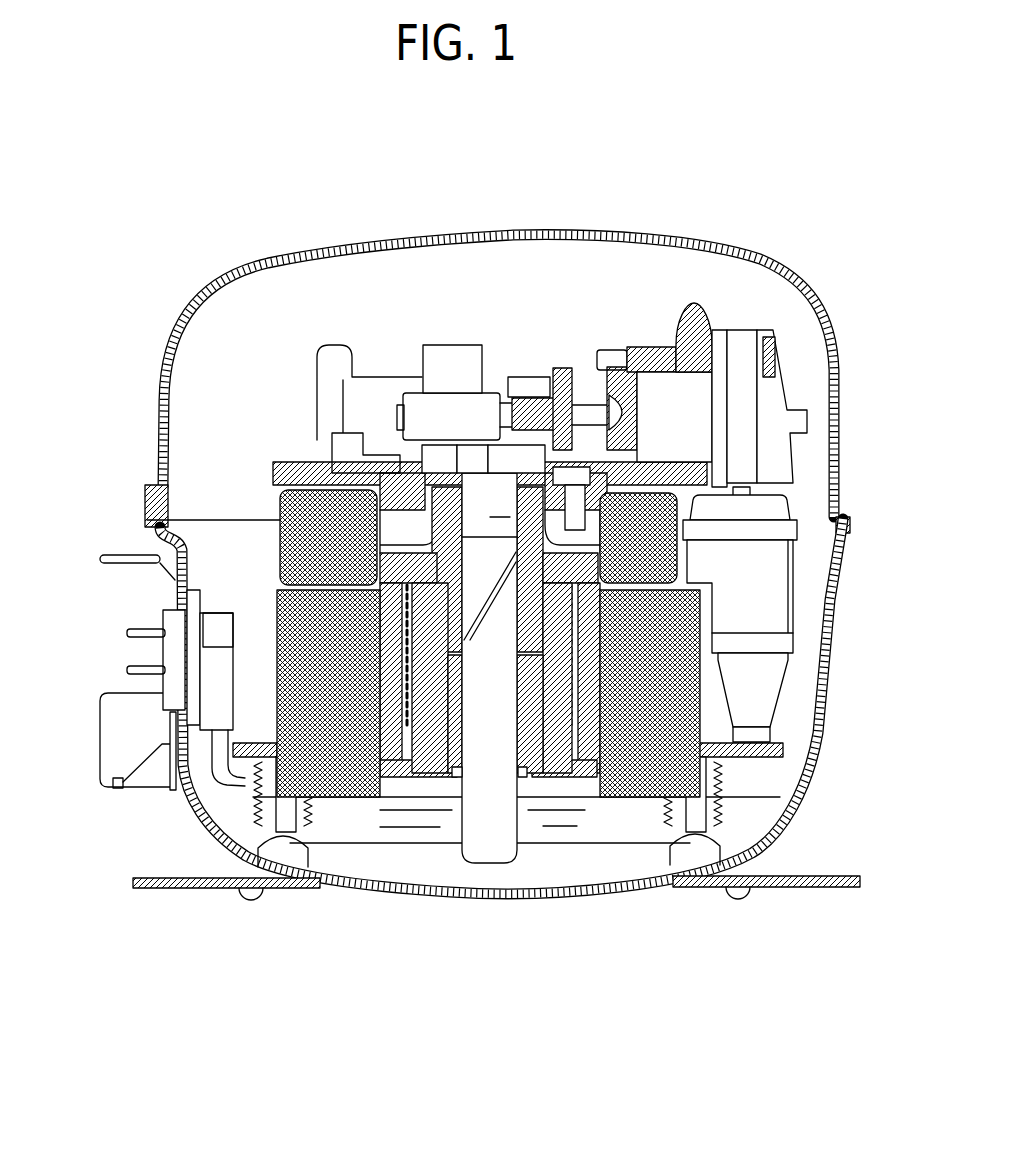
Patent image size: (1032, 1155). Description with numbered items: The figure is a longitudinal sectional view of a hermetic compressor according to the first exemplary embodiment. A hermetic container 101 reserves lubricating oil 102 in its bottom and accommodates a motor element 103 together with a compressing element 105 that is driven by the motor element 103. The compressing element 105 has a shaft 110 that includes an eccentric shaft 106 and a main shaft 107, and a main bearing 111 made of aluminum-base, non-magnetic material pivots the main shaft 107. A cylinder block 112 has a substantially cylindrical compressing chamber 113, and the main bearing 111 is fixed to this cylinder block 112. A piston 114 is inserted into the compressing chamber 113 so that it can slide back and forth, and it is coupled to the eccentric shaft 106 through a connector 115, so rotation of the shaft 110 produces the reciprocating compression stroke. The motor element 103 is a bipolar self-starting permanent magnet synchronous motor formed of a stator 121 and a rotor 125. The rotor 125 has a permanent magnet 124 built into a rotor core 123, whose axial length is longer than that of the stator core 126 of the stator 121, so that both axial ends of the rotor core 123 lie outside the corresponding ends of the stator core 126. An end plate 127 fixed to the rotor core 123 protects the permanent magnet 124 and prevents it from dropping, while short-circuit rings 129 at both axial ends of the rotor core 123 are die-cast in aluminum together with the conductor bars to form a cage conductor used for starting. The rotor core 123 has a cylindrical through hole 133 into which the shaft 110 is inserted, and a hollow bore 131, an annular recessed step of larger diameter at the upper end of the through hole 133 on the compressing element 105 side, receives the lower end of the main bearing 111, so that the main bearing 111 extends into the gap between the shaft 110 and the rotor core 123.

The hermetic container 101 is at (198, 325).
The lubricating oil 102 is at (378, 865).
The motor element 103 is at (240, 710).
The compressing element 105 is at (645, 350).
The eccentric shaft 106 is at (443, 373).
The main shaft 107 is at (672, 492).
The shaft 110 is at (510, 775).
The main bearing 111 is at (332, 470).
The cylinder block 112 is at (695, 317).
The compressing chamber 113 is at (668, 388).
The piston 114 is at (652, 418).
The connector 115 is at (533, 403).
The stator 121 is at (275, 595).
The rotor core 123 is at (763, 758).
The permanent magnet 124 is at (700, 670).
The rotor 125 is at (700, 612).
The stator core 126 is at (357, 660).
The end plate 127 is at (390, 705).
The short-circuit rings 129 is at (540, 690).
The bore 131 is at (280, 543).
The through hole 133 is at (487, 698).